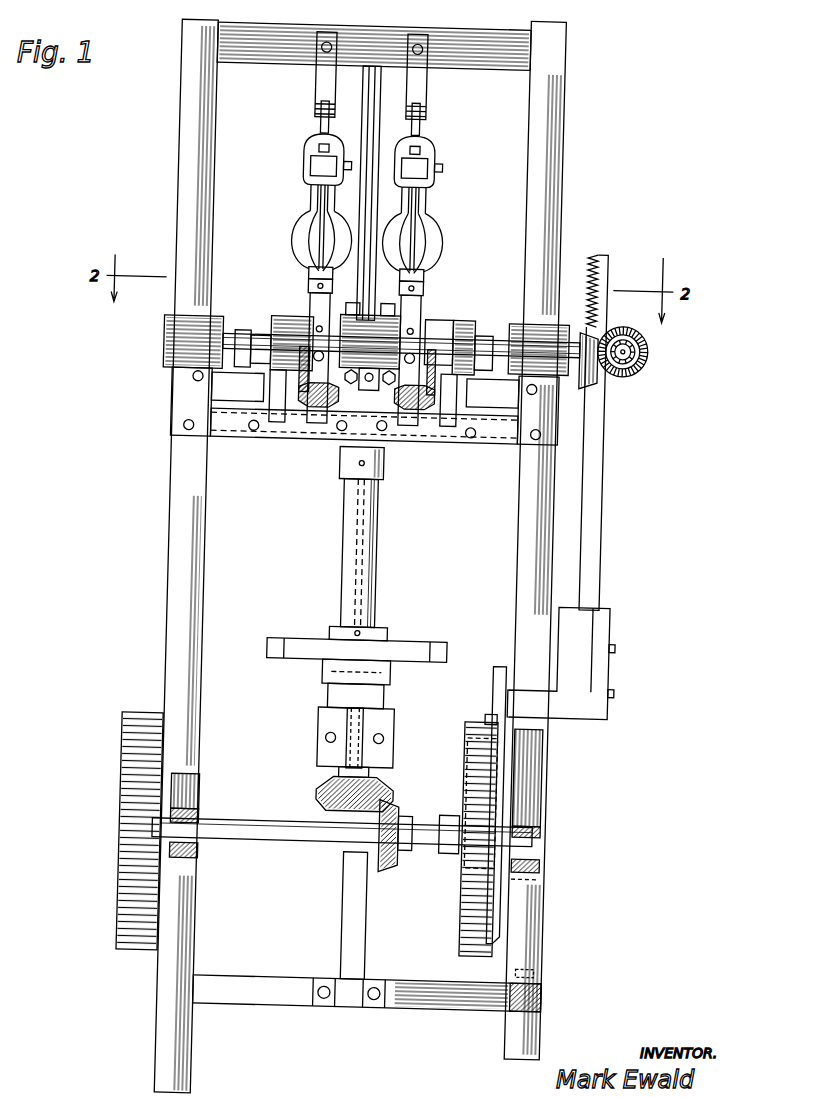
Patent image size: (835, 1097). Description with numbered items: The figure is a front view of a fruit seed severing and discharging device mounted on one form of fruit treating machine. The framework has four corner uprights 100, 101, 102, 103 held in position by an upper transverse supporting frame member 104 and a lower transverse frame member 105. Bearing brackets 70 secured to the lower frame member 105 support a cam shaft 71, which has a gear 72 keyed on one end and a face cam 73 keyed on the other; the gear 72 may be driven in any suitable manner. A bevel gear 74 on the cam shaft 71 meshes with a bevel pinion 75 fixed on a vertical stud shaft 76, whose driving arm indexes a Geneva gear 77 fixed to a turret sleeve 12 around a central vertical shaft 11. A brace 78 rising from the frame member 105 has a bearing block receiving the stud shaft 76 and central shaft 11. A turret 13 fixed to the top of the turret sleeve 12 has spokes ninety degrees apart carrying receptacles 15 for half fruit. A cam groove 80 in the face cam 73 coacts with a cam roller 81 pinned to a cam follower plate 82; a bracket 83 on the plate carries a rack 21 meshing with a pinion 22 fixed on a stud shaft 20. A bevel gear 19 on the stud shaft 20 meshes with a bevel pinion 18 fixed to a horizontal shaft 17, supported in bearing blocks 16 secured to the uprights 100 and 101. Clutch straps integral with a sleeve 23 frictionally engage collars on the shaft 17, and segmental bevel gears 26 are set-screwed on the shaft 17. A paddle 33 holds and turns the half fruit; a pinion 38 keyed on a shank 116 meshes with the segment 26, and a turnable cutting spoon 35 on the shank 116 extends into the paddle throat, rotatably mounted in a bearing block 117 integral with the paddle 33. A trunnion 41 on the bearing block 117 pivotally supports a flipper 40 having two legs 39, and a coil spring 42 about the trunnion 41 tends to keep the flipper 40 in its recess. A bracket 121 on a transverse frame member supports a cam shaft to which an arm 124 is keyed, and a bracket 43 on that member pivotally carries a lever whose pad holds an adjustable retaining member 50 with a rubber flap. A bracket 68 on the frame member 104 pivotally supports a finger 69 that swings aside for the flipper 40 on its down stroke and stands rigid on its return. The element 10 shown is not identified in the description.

The left bearing bracket 10 is at (183, 340).
The central vertical shaft 11 is at (366, 92).
The turret sleeve 12 is at (350, 539).
The turret 13 is at (343, 468).
The holding or supporting means for half fruit 15 is at (435, 323).
The bearing blocks 16 is at (540, 325).
The horizontal shaft 17 is at (493, 337).
The bevel pinion 18 is at (598, 366).
The bevel gear 19 is at (630, 330).
The stud shaft 20 is at (635, 345).
The rack 21 is at (602, 409).
The pinion 22 is at (641, 363).
The sleeve 23 is at (364, 318).
The segmental bevel gears 26 is at (298, 394).
The paddle 33 is at (434, 220).
The spoon 35 is at (415, 239).
The pinion 38 is at (431, 393).
The legs 39 is at (416, 193).
The flipper 40 is at (405, 139).
The trunnion 41 is at (432, 166).
The coil spring 42 is at (533, 466).
The bracket 43 is at (243, 440).
The retaining member 50 is at (468, 327).
The bracket 68 is at (416, 96).
The finger 69 is at (414, 127).
The bearing brackets 70 is at (143, 856).
The cam shaft 71 is at (543, 833).
The gear 72 is at (137, 806).
The face cam 73 is at (480, 914).
The bevel gear 74 is at (402, 864).
The bevel pinion 75 is at (332, 799).
The vertical stud shaft 76 is at (341, 770).
The Geneva gear 77 is at (453, 648).
The brace 78 is at (366, 745).
The cam groove 80 is at (494, 757).
The cam roller 81 is at (498, 712).
The cam follower plate 82 is at (511, 760).
The bracket 83 is at (582, 709).
The corner upright 100 is at (204, 494).
The corner upright 101 is at (541, 504).
The corner upright 102 is at (539, 781).
The corner upright 103 is at (202, 794).
The upper transverse supporting frame member 104 is at (479, 45).
The lower transverse frame member 105 is at (495, 1007).
The shank 116 is at (399, 414).
The bearing block 117 is at (413, 162).
The bracket 121 is at (367, 420).
The arm 124 is at (347, 400).